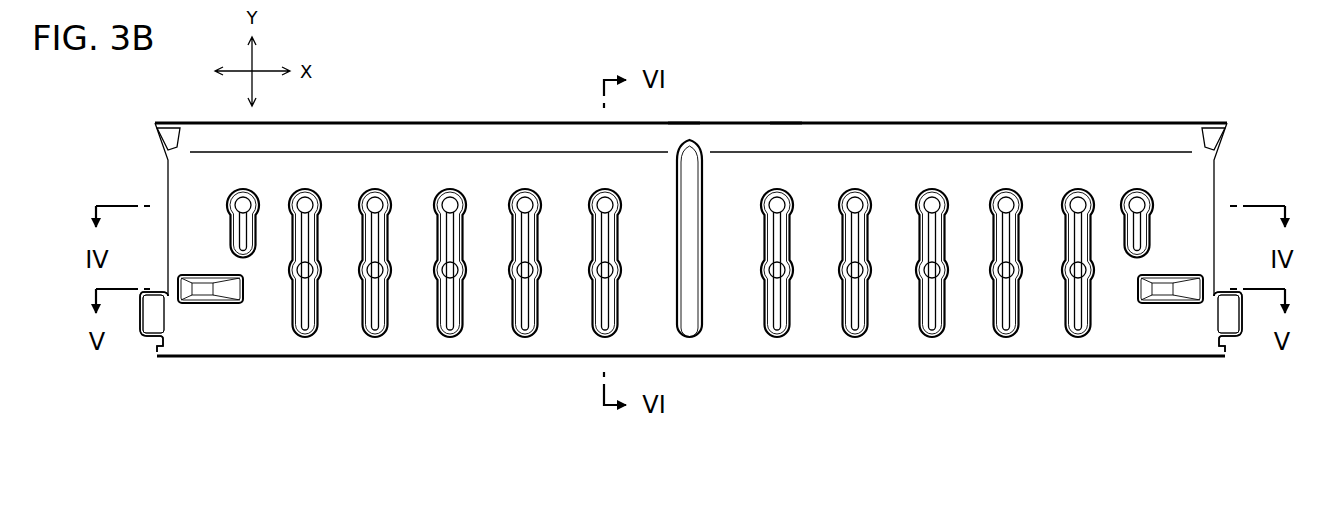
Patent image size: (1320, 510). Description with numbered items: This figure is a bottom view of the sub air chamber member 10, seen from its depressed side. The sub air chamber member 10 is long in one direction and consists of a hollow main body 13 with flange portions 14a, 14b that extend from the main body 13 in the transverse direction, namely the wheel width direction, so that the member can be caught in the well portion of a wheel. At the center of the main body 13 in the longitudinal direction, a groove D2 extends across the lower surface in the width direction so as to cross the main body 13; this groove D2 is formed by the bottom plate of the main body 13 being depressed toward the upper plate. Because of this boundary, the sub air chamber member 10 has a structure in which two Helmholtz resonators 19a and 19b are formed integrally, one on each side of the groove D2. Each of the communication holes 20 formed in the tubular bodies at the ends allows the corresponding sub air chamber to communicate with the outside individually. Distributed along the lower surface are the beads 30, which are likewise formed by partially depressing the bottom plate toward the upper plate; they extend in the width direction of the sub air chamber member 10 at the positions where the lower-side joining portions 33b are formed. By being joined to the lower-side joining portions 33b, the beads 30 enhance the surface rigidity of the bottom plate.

The sub air chamber member 10 is at (678, 61).
The main body 13 is at (408, 180).
The flange portion 14a is at (875, 127).
The flange portion 14b is at (884, 340).
The Helmholtz resonator 19a is at (683, 121).
The Helmholtz resonator 19b is at (786, 121).
The communication hole 20 is at (149, 318).
The bead 30 is at (535, 243).
The lower-side joining portion 33b is at (528, 205).
The groove D2 is at (690, 247).